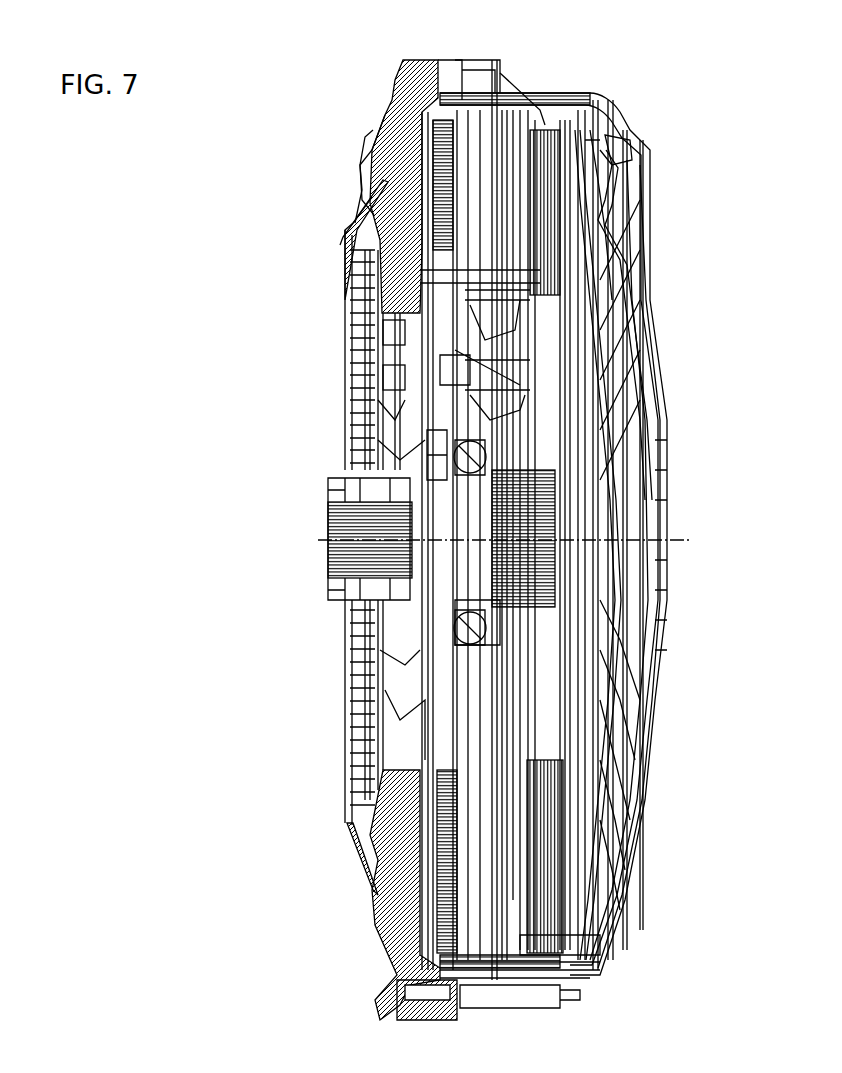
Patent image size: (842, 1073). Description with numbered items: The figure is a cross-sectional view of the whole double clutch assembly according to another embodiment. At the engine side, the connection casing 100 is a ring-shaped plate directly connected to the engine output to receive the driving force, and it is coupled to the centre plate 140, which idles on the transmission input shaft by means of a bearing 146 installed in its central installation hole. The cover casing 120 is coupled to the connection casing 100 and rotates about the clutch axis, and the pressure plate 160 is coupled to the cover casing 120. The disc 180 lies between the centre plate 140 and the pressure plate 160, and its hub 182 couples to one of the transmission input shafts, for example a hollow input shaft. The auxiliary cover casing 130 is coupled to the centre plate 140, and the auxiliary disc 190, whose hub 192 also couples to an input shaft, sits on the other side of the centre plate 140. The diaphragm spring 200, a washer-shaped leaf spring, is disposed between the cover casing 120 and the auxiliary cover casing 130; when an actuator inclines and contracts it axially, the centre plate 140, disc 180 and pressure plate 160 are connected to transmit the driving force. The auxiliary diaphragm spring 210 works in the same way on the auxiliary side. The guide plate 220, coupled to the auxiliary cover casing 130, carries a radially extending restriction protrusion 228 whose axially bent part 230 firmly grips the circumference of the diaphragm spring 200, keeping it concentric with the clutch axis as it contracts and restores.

The connection casing 100 is at (355, 215).
The cover casing 120 is at (597, 93).
The auxiliary cover casing 130 is at (547, 113).
The centre plate 140 is at (443, 108).
The bearing 146 is at (447, 480).
The pressure plate 160 is at (415, 102).
The disc 180 is at (427, 167).
The hub 182 is at (343, 493).
The auxiliary disc 190 is at (525, 285).
The hub 192 is at (495, 608).
The diaphragm spring 200 is at (650, 350).
The auxiliary diaphragm spring 210 is at (565, 380).
The guide plate 220 is at (600, 250).
The restriction protrusion 228 is at (610, 173).
The bent part 230 is at (620, 132).